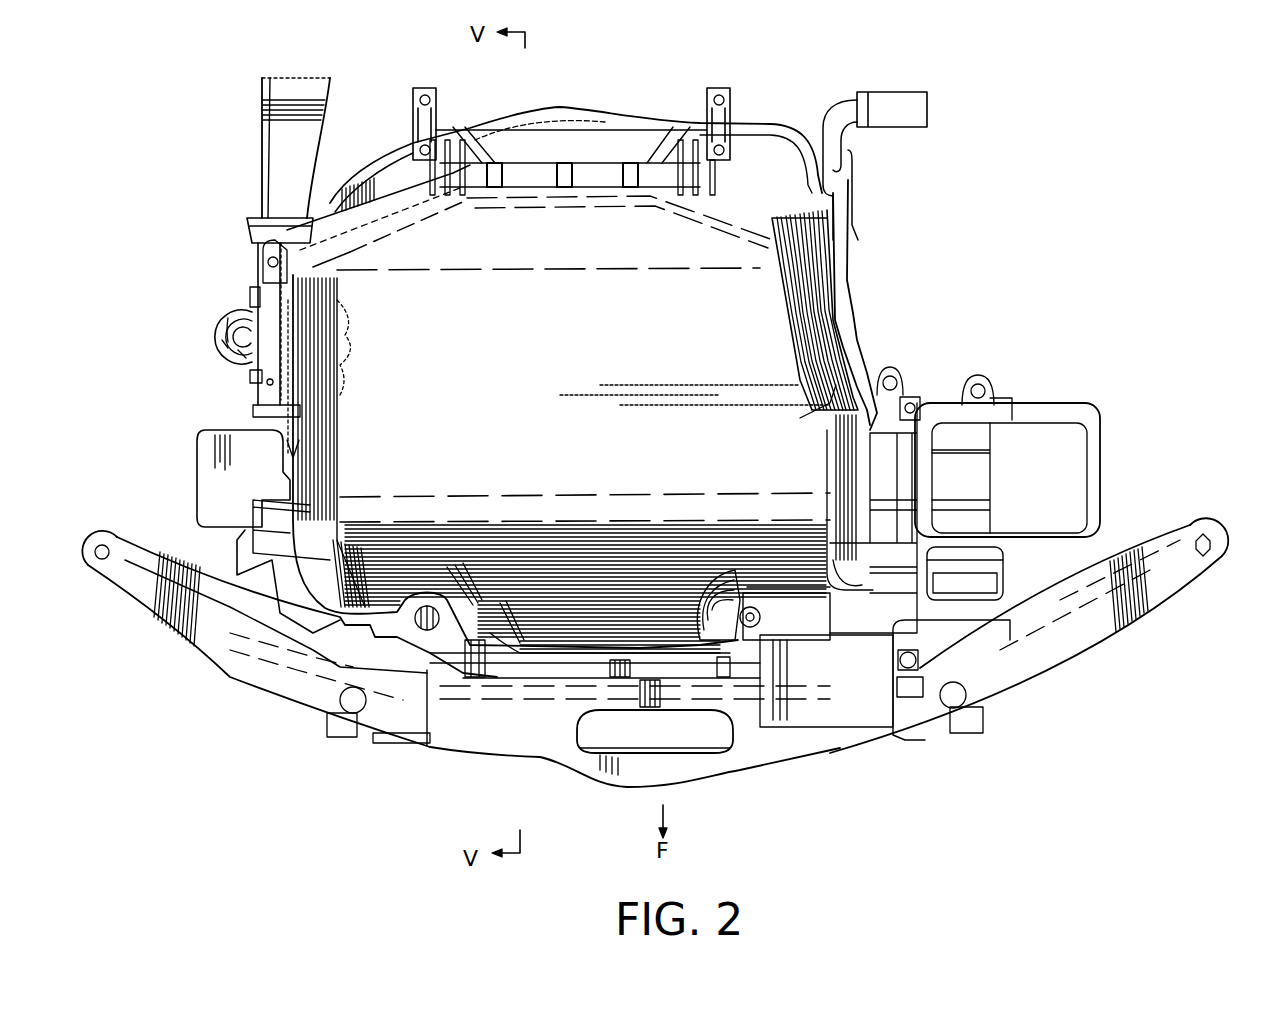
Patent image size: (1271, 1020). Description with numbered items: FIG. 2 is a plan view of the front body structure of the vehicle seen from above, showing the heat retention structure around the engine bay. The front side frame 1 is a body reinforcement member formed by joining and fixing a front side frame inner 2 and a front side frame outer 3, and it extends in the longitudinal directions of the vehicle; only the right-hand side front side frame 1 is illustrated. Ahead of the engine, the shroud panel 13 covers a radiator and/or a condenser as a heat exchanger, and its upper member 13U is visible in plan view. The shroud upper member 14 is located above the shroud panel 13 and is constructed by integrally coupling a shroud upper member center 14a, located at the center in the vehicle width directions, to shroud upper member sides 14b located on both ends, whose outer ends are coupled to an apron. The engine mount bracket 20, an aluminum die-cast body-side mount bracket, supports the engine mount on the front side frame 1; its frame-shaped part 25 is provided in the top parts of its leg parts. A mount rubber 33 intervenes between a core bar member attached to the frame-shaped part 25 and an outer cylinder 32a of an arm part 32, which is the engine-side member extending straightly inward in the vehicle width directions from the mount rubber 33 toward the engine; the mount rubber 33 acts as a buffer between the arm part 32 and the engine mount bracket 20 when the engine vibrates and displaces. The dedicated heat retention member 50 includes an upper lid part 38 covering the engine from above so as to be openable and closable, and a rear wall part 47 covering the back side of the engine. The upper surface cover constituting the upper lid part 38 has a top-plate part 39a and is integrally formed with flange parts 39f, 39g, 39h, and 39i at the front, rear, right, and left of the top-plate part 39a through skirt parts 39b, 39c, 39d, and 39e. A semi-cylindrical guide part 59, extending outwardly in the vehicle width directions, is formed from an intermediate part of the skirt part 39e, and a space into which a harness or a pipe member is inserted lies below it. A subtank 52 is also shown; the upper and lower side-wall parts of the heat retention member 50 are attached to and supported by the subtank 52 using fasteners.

The front side frame 1 is at (262, 118).
The front side frame inner 2 is at (300, 147).
The front side frame outer 3 is at (262, 153).
The shroud panel 13 is at (693, 753).
The upper member 13U is at (603, 745).
The shroud upper member 14 is at (745, 773).
The shroud upper member center 14a is at (518, 745).
The shroud upper member side 14b is at (228, 652).
The engine mount bracket 20 is at (218, 341).
The frame-shaped part 25 is at (237, 354).
The arm part 32 is at (348, 335).
The outer cylinder 32a is at (228, 322).
The mount rubber 33 is at (233, 312).
The upper lid part 38 is at (747, 317).
The top-plate part 39a is at (570, 398).
The skirt part 39b is at (600, 598).
The skirt part 39c is at (580, 213).
The skirt part 39d is at (822, 400).
The skirt part 39e is at (327, 407).
The flange part 39f is at (647, 660).
The flange part 39g is at (601, 170).
The flange part 39h is at (840, 330).
The flange part 39i is at (292, 457).
The rear wall part 47 is at (566, 126).
The heat retention member 50 is at (870, 358).
The subtank 52 is at (197, 466).
The guide part 59 is at (257, 513).